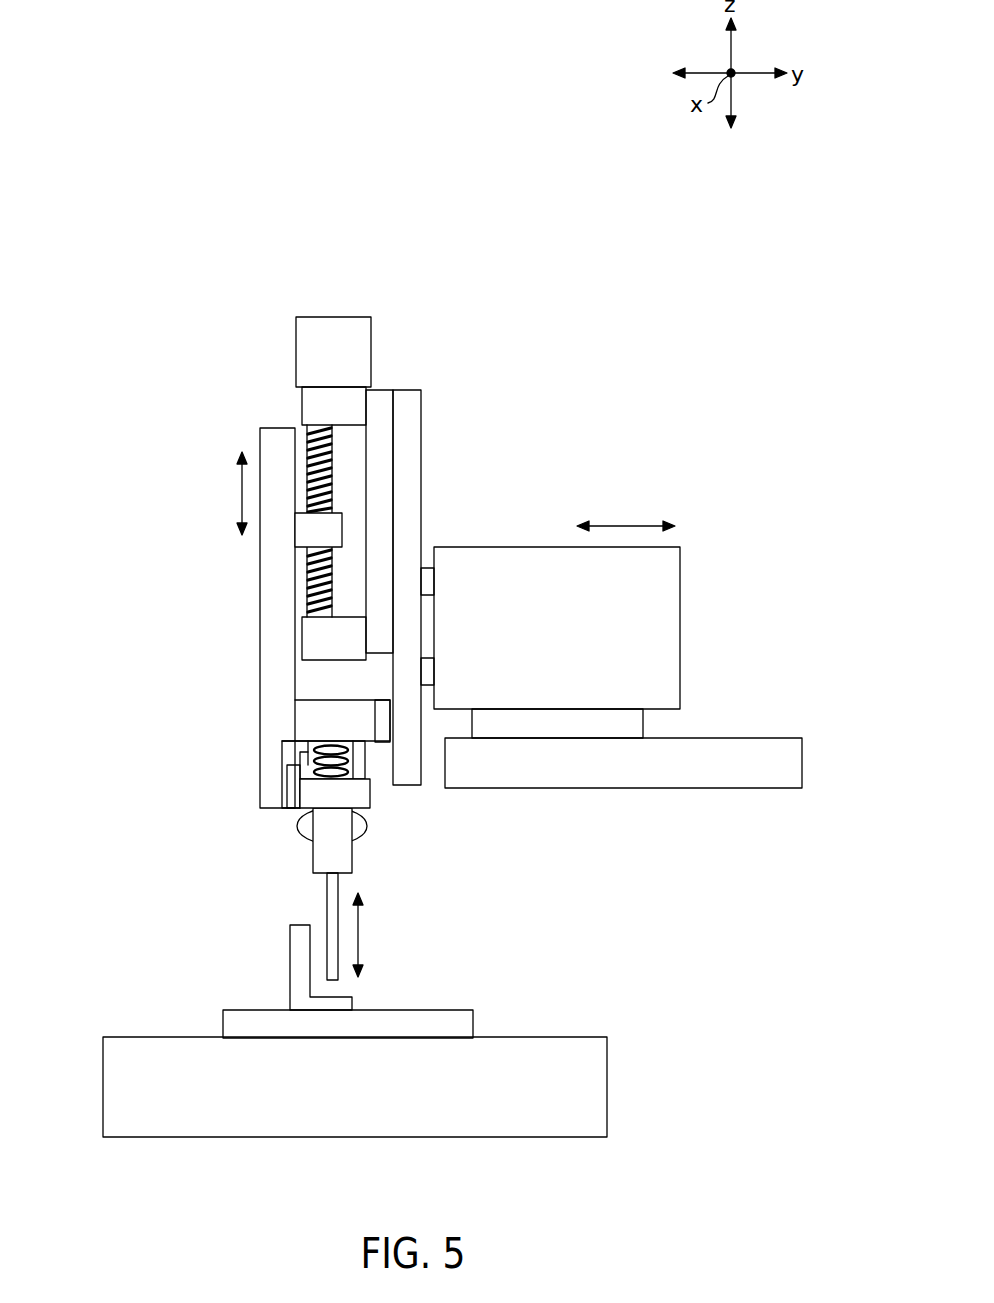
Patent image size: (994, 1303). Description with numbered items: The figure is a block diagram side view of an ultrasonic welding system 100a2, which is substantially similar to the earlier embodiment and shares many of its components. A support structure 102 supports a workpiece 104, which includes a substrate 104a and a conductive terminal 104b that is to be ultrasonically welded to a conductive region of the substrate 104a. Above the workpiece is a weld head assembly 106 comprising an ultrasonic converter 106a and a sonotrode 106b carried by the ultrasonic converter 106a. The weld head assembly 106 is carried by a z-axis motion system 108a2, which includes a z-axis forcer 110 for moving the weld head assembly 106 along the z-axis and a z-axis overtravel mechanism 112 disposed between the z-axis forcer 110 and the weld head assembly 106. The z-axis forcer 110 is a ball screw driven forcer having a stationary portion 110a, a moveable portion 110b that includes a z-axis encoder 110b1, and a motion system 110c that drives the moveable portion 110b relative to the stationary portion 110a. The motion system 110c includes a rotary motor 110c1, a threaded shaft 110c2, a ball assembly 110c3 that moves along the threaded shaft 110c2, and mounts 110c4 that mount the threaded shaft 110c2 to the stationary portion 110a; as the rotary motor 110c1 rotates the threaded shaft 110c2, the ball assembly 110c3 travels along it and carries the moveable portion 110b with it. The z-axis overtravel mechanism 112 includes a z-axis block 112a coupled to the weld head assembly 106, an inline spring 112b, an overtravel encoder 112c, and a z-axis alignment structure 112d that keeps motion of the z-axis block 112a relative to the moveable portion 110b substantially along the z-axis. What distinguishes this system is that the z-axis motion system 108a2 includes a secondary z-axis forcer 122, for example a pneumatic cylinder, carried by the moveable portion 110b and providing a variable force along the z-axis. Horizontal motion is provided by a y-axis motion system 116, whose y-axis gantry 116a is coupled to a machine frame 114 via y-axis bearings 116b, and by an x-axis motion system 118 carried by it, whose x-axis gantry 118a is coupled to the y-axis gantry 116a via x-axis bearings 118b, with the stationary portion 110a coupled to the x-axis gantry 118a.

The ultrasonic welding system 100a2 is at (580, 294).
The support structure 102 is at (607, 1090).
The workpiece 104 is at (212, 1002).
The substrate 104a is at (478, 1012).
The conductive terminal 104b is at (292, 960).
The weld head assembly 106 is at (373, 862).
The ultrasonic converter 106a is at (320, 833).
The sonotrode 106b is at (325, 912).
The z-axis motion system 108a2 is at (205, 357).
The z-axis forcer 110 is at (188, 454).
The stationary portion 110a is at (393, 448).
The moveable portion 110b is at (260, 598).
The z-axis encoder 110b1 is at (380, 713).
The motion system 110c is at (380, 292).
The rotary motor 110c1 is at (328, 317).
The threaded shaft 110c2 is at (305, 490).
The ball assembly 110c3 is at (298, 535).
The mounts 110c4 is at (302, 395).
The z-axis overtravel mechanism 112 is at (386, 825).
The z-axis block 112a is at (335, 798).
The inline spring 112b is at (350, 760).
The overtravel encoder 112c is at (292, 788).
The z-axis alignment structure 112d is at (363, 768).
The machine frame 114 is at (733, 790).
The y-axis motion system 116 is at (718, 562).
The y-axis gantry 116a is at (680, 627).
The y-axis bearings 116b is at (643, 726).
The x-axis motion system 118 is at (450, 478).
The x-axis gantry 118a is at (422, 403).
The x-axis bearings 118b is at (427, 670).
The secondary z-axis forcer 122 is at (318, 745).